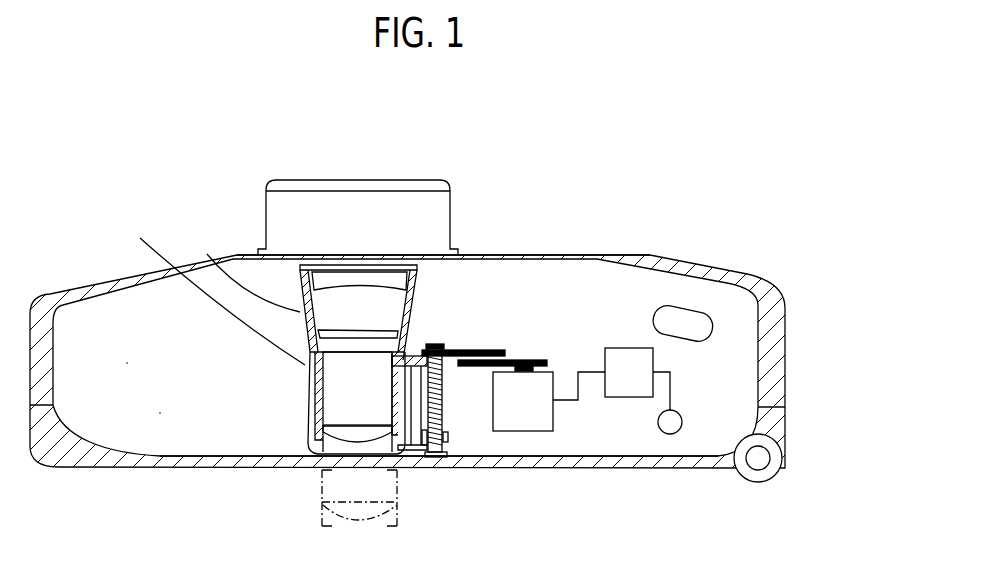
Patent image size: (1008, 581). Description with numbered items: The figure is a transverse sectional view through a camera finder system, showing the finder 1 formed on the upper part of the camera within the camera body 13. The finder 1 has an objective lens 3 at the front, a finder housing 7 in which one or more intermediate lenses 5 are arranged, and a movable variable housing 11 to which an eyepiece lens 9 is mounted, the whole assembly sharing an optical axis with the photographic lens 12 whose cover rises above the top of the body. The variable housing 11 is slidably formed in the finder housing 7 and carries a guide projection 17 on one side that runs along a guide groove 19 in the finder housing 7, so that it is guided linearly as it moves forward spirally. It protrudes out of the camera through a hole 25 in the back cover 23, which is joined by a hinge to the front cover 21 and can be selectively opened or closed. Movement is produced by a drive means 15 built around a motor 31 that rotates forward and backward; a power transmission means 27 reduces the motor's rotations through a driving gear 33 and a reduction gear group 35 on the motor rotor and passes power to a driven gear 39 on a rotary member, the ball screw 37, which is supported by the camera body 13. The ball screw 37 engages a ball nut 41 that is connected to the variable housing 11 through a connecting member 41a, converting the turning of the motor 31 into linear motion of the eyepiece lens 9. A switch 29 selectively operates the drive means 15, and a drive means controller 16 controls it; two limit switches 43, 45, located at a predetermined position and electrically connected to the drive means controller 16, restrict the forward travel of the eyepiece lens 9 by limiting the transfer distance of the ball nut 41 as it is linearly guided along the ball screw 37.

The finder 1 is at (293, 400).
The objective lens 3 is at (334, 278).
The intermediate lens 5 is at (378, 327).
The finder housing 7 is at (207, 254).
The eyepiece lens 9 is at (345, 442).
The variable housing 11 is at (306, 411).
The photographic lens 12 is at (290, 202).
The camera body 13 is at (735, 176).
The drive means 15 is at (575, 357).
The drive means controller 16 is at (628, 392).
The guide projection 17 is at (206, 291).
The guide groove 19 is at (300, 404).
The front cover 21 is at (773, 348).
The back cover 23 is at (569, 462).
The hole 25 is at (360, 463).
The power transmission means 27 is at (505, 348).
The switch 29 is at (670, 422).
The motor 31 is at (523, 431).
The driving gear 33 is at (545, 362).
The reduction gear group 35 is at (550, 352).
The ball screw 37 is at (447, 414).
The driven gear 39 is at (493, 328).
The ball nut 41 is at (443, 368).
The connecting member 41a is at (424, 447).
The limit switch 43 is at (422, 342).
The limit switch 45 is at (412, 450).